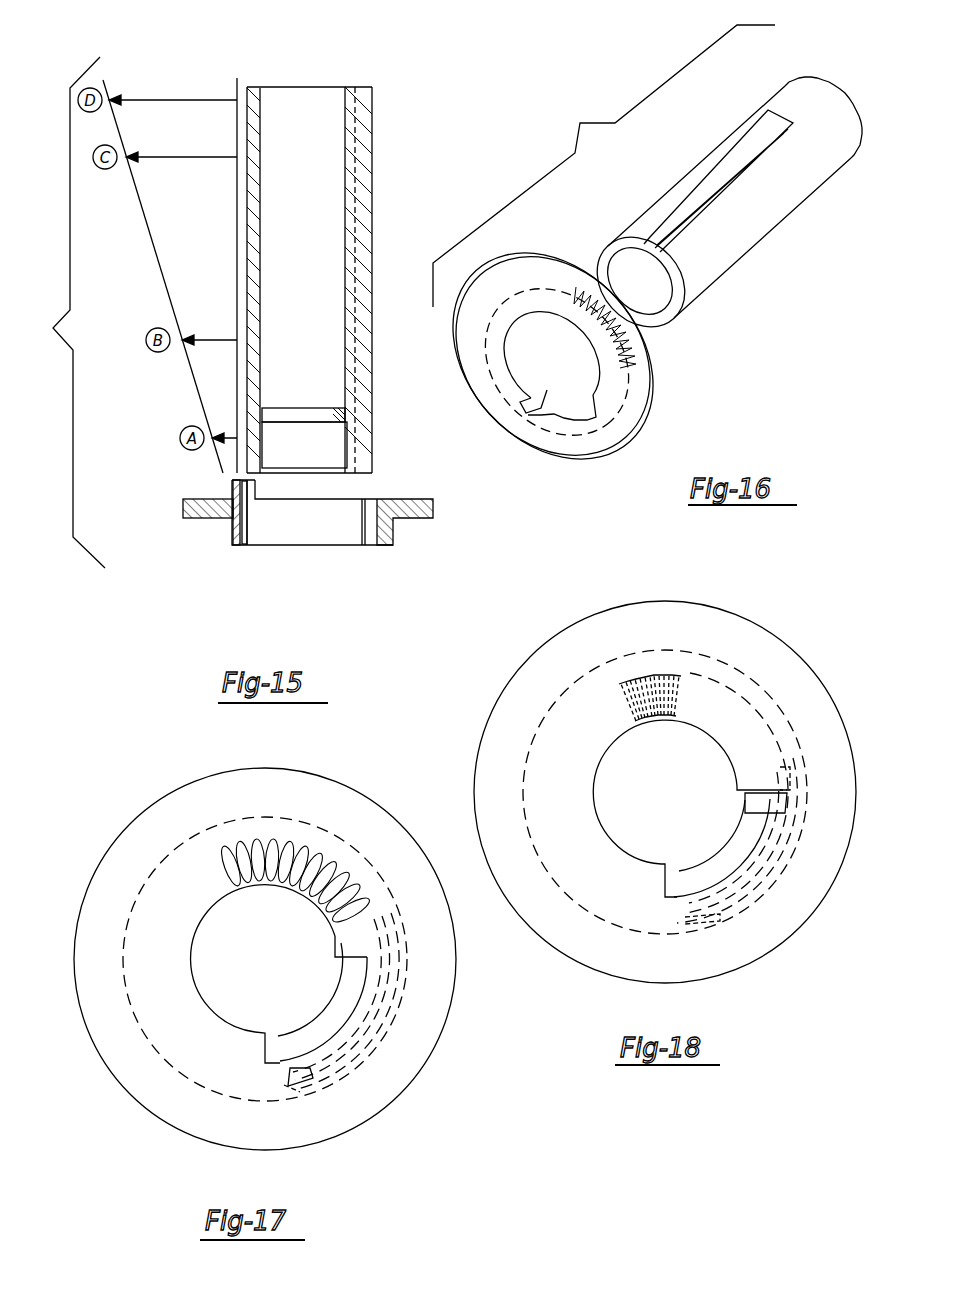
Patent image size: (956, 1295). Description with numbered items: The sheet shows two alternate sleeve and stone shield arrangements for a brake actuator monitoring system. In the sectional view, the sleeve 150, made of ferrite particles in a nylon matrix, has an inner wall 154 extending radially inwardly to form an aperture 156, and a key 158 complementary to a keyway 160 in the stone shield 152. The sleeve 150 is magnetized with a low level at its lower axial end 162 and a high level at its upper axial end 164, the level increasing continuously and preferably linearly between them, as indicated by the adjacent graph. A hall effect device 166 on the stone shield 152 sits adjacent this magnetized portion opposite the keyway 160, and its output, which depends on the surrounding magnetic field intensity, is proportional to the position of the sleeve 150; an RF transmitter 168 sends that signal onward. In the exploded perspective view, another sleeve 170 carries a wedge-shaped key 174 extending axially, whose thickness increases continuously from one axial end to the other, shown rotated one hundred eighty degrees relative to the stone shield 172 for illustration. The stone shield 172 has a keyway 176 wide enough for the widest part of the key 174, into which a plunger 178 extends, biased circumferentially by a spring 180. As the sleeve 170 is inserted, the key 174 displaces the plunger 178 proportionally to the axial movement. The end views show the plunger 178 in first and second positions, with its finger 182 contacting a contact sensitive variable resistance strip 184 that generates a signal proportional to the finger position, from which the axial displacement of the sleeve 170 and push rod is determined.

In FIG. 15, the sleeve 150 is at (376, 128).
In FIG. 15, the stone shield 152 is at (436, 506).
In FIG. 15, the inner wall 154 is at (270, 418).
In FIG. 15, the aperture 156 is at (275, 421).
In FIG. 15, the key 158 is at (372, 187).
In FIG. 15, the keyway 160 is at (362, 545).
In FIG. 15, the lower axial end 162 is at (255, 478).
In FIG. 15, the upper axial end 164 is at (257, 87).
In FIG. 15, the hall effect device 166 is at (237, 500).
In FIG. 15, the RF transmitter 168 is at (235, 545).
In FIG. 16, the sleeve 170 is at (716, 134).
In FIG. 16, the stone shield 172 is at (660, 383).
In FIG. 16, the wedge-shaped key 174 is at (690, 190).
In FIG. 16, the keyway 176 is at (540, 387).
In FIG. 17, the keyway 176 is at (266, 1047).
In FIG. 18, the keyway 176 is at (663, 877).
In FIG. 16, the plunger 178 is at (575, 427).
In FIG. 17, the plunger 178 is at (327, 1003).
In FIG. 18, the plunger 178 is at (747, 800).
In FIG. 16, the spring 180 is at (567, 300).
In FIG. 17, the spring 180 is at (317, 857).
In FIG. 18, the spring 180 is at (643, 673).
In FIG. 17, the finger 182 is at (308, 1073).
In FIG. 18, the finger 182 is at (770, 798).
In FIG. 17, the variable resistance strip 184 is at (380, 1027).
In FIG. 18, the variable resistance strip 184 is at (778, 860).